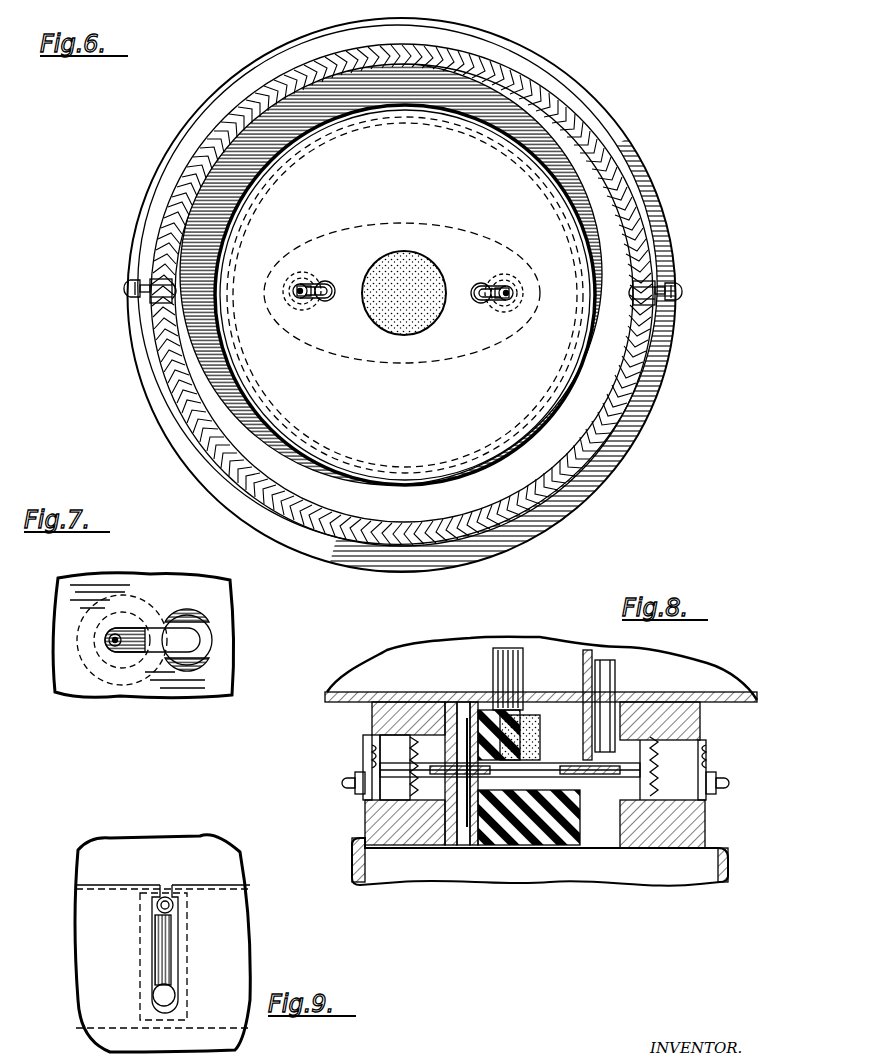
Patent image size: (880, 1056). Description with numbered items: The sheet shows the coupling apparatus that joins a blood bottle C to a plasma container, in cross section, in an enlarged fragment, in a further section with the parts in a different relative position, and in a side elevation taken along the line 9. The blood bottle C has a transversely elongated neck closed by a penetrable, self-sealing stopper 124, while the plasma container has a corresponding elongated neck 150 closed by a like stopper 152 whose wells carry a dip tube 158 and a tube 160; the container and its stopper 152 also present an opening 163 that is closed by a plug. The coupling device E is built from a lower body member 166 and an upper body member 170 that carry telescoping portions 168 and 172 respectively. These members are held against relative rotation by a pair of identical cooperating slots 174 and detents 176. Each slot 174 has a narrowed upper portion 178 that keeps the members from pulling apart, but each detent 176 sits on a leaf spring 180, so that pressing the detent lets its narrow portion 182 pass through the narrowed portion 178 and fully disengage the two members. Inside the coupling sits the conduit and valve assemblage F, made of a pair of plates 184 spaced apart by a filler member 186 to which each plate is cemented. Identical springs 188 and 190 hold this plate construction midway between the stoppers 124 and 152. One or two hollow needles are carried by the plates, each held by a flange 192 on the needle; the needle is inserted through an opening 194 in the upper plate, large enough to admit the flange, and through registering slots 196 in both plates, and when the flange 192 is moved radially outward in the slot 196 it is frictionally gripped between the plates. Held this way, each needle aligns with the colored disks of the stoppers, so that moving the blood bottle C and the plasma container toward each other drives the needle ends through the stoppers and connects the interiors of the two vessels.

In FIG. 6, the stopper 124 is at (420, 297).
In FIG. 8, the neck 150 is at (447, 702).
In FIG. 8, the stopper 152 is at (565, 716).
In FIG. 8, the dip tube 158 is at (618, 690).
In FIG. 8, the tube 160 is at (472, 702).
In FIG. 8, the opening 163 is at (556, 675).
In FIG. 8, the lower body member 166 is at (690, 830).
In FIG. 6, the telescoping portion 168 is at (655, 350).
In FIG. 8, the upper body member 170 is at (640, 748).
In FIG. 9, the upper body member 170 is at (180, 856).
In FIG. 6, the telescoping portion 172 is at (632, 214).
In FIG. 8, the telescoping portion 172 is at (660, 768).
In FIG. 8, the slot 174 is at (375, 748).
In FIG. 9, the slot 174 is at (172, 950).
In FIG. 6, the detent 176 is at (133, 294).
In FIG. 8, the detent 176 is at (347, 786).
In FIG. 9, the detent 176 is at (175, 990).
In FIG. 9, the narrowed upper portion 178 is at (173, 905).
In FIG. 6, the leaf spring 180 is at (185, 300).
In FIG. 8, the leaf spring 180 is at (385, 762).
In FIG. 6, the narrow portion 182 is at (140, 278).
In FIG. 8, the narrow portion 182 is at (355, 783).
In FIG. 9, the narrow portion 182 is at (153, 998).
In FIG. 6, the plate 184 is at (416, 411).
In FIG. 8, the plate 184 is at (645, 768).
In FIG. 8, the filler member 186 is at (668, 773).
In FIG. 8, the spring 188 is at (410, 702).
In FIG. 8, the spring 190 is at (405, 790).
In FIG. 6, the flange 192 is at (305, 297).
In FIG. 7, the flange 192 is at (133, 645).
In FIG. 8, the flange 192 is at (520, 763).
In FIG. 6, the opening 194 is at (326, 281).
In FIG. 7, the opening 194 is at (195, 618).
In FIG. 6, the slot 196 is at (299, 284).
In FIG. 7, the slot 196 is at (125, 632).
In FIG. 6, the blood bottle C is at (643, 151).
In FIG. 6, the coupling device E is at (160, 393).
In FIG. 8, the coupling device E is at (332, 846).
In FIG. 8, the conduit and valve assemblage F is at (520, 788).
In FIG. 8, the section line 9 is at (352, 715).